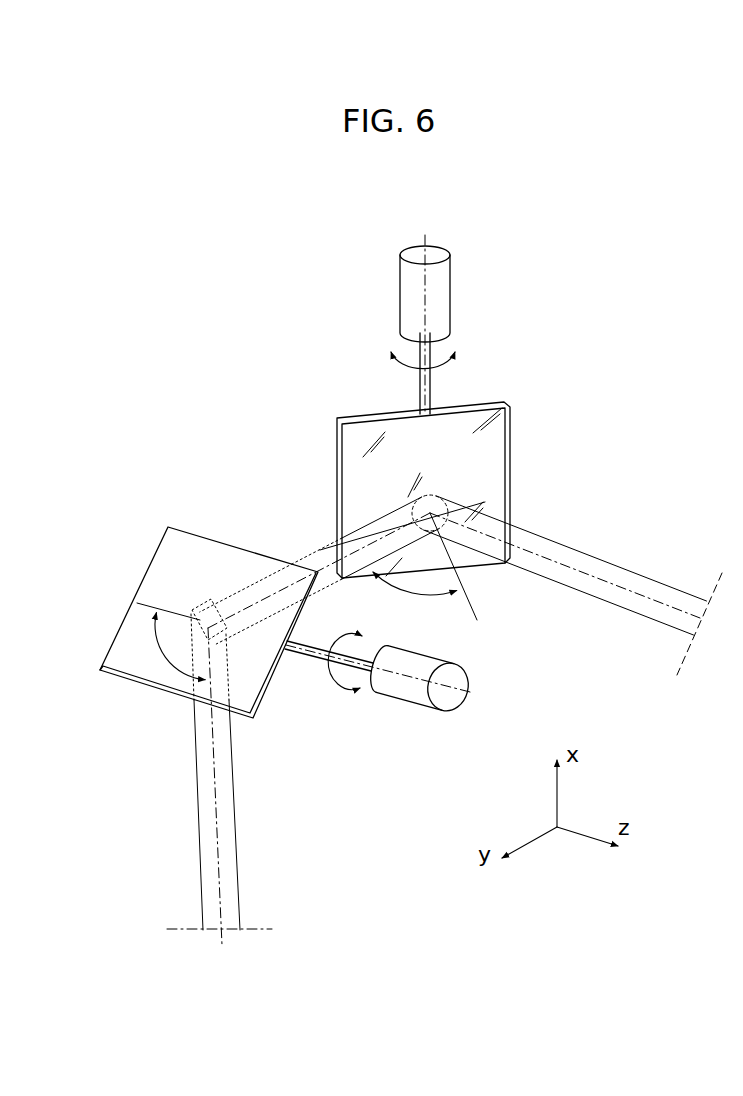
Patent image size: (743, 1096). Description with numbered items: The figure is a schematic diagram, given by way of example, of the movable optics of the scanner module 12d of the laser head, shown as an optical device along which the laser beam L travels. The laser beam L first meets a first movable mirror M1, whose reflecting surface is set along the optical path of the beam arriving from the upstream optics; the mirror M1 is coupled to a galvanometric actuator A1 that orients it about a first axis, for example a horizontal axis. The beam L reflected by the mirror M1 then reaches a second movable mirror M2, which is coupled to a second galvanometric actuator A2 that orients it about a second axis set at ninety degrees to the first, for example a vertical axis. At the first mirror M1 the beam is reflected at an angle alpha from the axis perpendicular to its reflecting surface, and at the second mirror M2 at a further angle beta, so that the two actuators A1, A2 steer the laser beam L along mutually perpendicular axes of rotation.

The scanner module 12d is at (632, 402).
The actuator A1 is at (443, 300).
The actuator A2 is at (410, 693).
The first movable mirror M1 is at (490, 462).
The second movable mirror M2 is at (217, 557).
The laser beam L is at (630, 598).